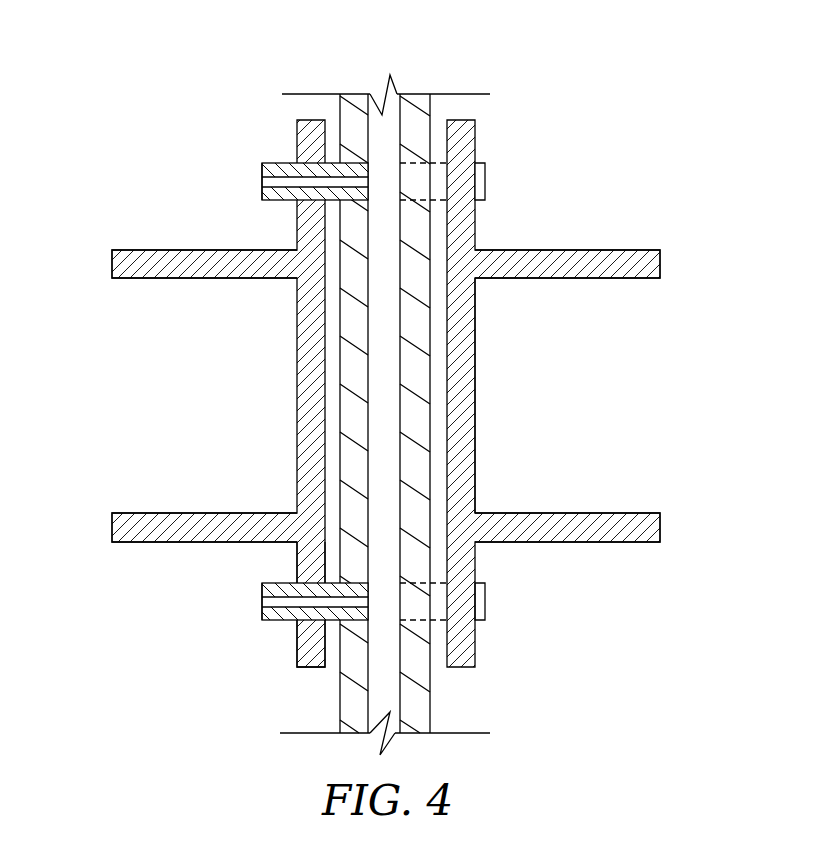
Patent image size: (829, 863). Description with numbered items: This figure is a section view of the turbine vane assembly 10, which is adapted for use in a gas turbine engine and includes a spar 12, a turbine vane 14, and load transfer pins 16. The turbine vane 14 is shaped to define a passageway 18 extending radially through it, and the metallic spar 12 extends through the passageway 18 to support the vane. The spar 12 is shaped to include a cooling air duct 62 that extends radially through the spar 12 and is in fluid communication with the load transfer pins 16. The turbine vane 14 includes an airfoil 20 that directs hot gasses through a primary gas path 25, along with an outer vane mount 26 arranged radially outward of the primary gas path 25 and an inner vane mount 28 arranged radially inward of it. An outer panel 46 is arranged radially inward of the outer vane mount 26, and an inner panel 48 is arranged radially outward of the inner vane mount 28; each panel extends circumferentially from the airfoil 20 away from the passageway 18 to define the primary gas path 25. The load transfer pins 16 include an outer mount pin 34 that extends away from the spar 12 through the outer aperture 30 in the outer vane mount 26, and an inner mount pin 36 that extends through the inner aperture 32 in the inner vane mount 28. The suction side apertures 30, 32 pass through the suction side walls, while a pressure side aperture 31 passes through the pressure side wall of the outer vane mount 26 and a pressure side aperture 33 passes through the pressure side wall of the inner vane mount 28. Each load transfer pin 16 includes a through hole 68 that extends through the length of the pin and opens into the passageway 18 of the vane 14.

The turbine vane assembly 10 is at (663, 73).
The spar 12 is at (462, 90).
The turbine vane 14 is at (670, 412).
The load transfer pins 16 is at (182, 165).
The passageway 18 is at (331, 675).
The airfoil 20 is at (477, 345).
The primary gas path 25 is at (210, 416).
The outer vane mount 26 is at (489, 229).
The inner vane mount 28 is at (489, 651).
The outer apertures 30 is at (288, 214).
The pressure side aperture 31 is at (488, 146).
The inner apertures 32 is at (284, 571).
The pressure side aperture 33 is at (486, 566).
The outer mount pin 34 is at (277, 163).
The inner mount pin 36 is at (277, 621).
The outer panel 46 is at (112, 265).
The inner panel 48 is at (112, 528).
The cooling air duct 62 is at (389, 150).
The through hole 68 is at (249, 184).